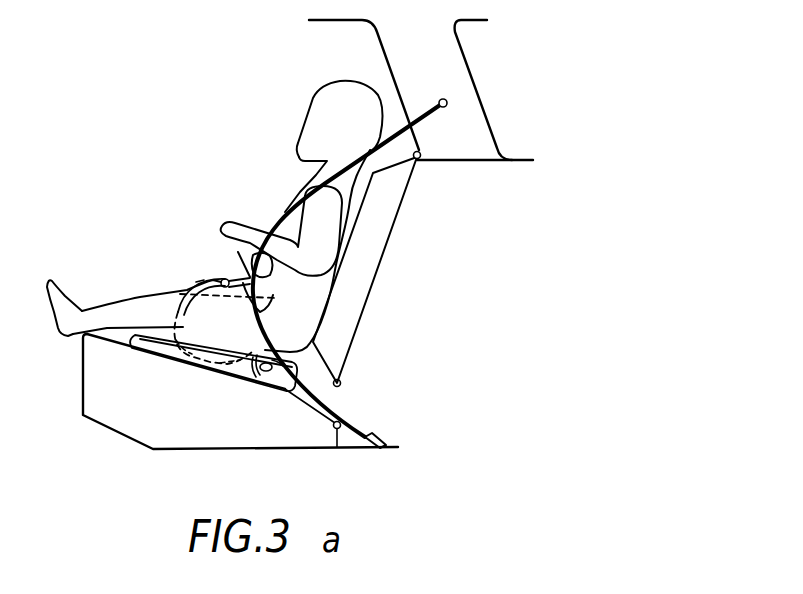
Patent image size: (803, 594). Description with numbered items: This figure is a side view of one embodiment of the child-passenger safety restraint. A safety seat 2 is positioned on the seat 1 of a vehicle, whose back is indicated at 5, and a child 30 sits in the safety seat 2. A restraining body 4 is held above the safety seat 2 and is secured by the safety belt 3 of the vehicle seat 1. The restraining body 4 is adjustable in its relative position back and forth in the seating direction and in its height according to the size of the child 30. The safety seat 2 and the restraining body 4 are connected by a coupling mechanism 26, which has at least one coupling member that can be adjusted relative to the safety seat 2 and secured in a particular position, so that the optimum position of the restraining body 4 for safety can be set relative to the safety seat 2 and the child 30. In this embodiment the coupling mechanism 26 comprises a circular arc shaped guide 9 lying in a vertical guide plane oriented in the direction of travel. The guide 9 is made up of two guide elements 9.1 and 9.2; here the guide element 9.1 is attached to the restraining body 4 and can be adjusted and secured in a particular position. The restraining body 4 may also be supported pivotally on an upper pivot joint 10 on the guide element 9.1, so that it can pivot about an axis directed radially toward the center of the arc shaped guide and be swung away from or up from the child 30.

The vehicle seat 1 is at (92, 388).
The safety seat 2 is at (168, 348).
The safety belt 3 is at (394, 136).
The restraining body 4 is at (243, 262).
The back of the vehicle seat 5 is at (377, 237).
The circular arc shaped guide 9 is at (183, 353).
The guide element 9.1 is at (203, 280).
The guide element 9.2 is at (227, 367).
The upper pivot joint 10 is at (223, 280).
The coupling mechanism 26 is at (170, 307).
The child 30 is at (308, 298).